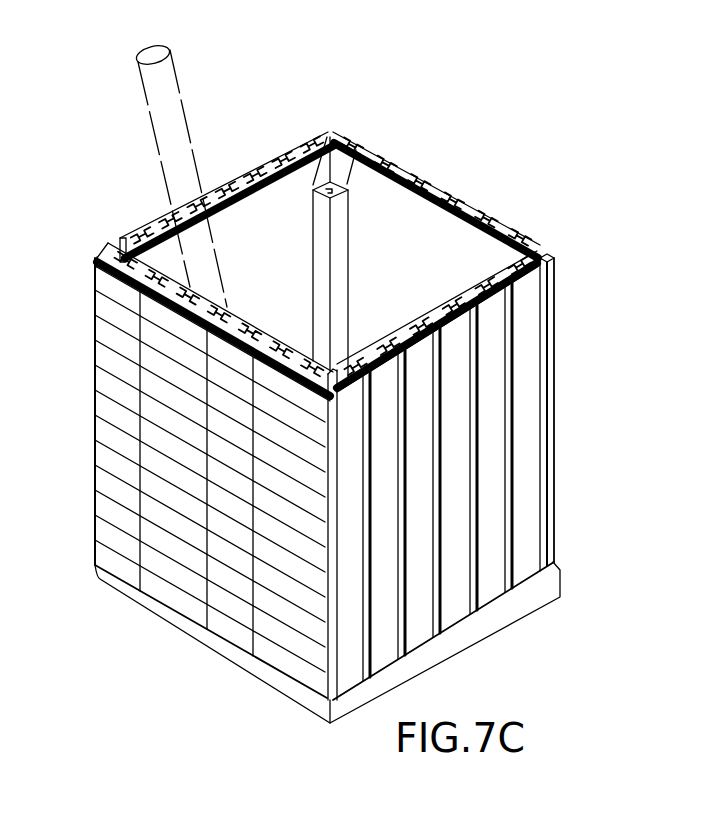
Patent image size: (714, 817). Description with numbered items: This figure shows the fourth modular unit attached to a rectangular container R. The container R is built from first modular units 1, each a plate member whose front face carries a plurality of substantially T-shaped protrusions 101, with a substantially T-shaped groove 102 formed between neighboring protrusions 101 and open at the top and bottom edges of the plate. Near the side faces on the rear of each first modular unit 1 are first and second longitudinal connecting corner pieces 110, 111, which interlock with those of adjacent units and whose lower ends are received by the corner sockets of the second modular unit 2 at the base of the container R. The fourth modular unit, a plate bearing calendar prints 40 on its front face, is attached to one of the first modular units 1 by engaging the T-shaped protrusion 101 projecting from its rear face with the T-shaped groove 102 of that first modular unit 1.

The container R is at (322, 260).
The first modular unit 1 is at (560, 404).
The second modular unit 2 is at (566, 570).
The calendar prints 40 is at (115, 566).
The T-shaped protrusion 101 is at (172, 222).
The T-shaped groove 102 is at (192, 289).
The first connecting corner piece 110 is at (346, 183).
The second connecting corner piece 111 is at (303, 157).